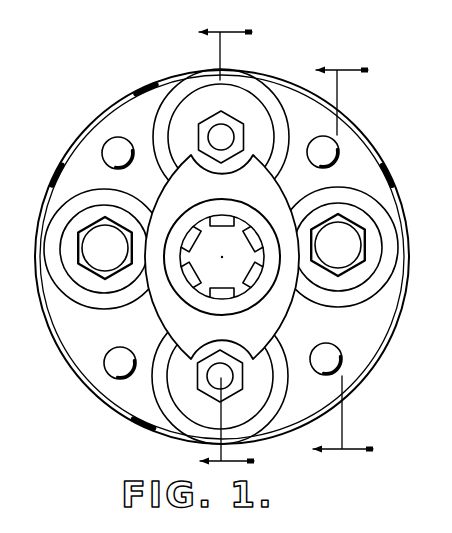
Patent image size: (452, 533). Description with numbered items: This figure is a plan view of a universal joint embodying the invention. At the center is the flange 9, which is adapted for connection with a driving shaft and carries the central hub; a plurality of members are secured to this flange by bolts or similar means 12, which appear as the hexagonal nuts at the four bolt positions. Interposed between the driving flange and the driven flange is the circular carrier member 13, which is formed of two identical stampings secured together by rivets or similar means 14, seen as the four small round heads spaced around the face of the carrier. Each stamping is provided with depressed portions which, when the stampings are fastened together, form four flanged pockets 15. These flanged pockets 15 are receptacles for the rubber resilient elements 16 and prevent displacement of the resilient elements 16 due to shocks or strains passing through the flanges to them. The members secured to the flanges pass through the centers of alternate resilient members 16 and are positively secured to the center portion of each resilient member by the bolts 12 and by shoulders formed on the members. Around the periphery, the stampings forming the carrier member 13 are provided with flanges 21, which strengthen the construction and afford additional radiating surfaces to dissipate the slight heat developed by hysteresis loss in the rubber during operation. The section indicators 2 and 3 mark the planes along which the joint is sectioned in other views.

The flange 9 is at (265, 198).
The bolts 12 is at (107, 218).
The carrier member 13 is at (354, 233).
The rivets 14 is at (127, 138).
The flanged pockets 15 is at (88, 193).
The resilient elements 16 is at (276, 80).
The flanges 21 is at (107, 115).
The section line 2- 2 is at (333, 259).
The section line 3- 3 is at (214, 246).